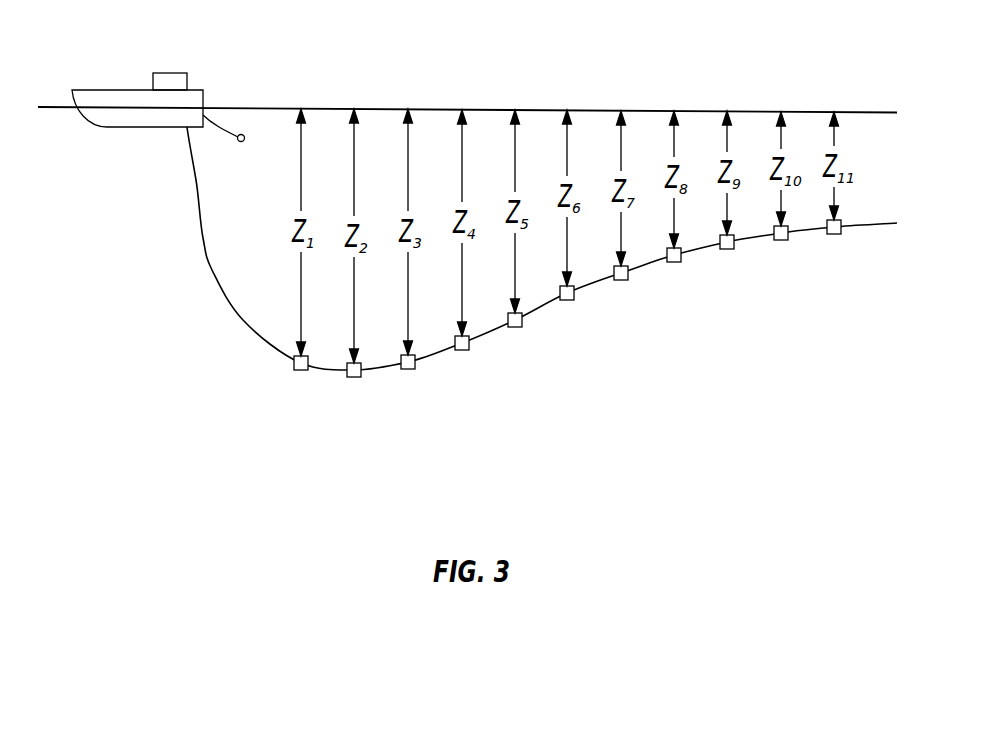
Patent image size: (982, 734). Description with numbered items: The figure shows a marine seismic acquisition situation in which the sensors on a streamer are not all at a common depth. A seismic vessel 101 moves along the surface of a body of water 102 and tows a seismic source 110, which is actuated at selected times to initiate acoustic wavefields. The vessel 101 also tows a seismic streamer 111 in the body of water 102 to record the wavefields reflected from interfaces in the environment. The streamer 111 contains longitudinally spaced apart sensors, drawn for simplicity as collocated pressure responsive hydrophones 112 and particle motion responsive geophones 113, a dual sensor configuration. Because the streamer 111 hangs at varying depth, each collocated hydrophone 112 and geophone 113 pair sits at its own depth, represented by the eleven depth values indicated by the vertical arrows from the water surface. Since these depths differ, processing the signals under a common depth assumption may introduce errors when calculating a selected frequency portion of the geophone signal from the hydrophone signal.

The seismic vessel 101 is at (170, 73).
The body of water 102 is at (98, 338).
The seismic source 110 is at (242, 142).
The seismic streamer 111 is at (203, 238).
The hydrophone 112 is at (571, 343).
The geophone 113 is at (301, 370).